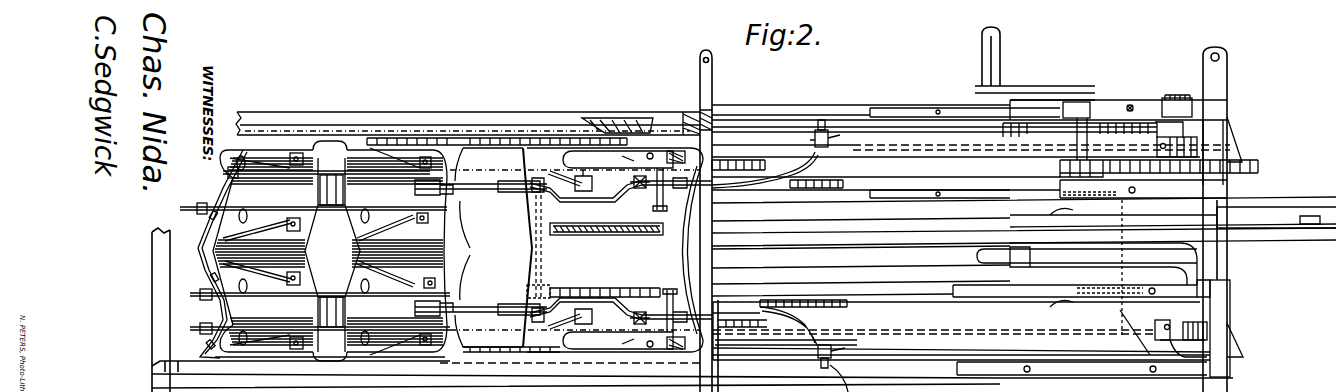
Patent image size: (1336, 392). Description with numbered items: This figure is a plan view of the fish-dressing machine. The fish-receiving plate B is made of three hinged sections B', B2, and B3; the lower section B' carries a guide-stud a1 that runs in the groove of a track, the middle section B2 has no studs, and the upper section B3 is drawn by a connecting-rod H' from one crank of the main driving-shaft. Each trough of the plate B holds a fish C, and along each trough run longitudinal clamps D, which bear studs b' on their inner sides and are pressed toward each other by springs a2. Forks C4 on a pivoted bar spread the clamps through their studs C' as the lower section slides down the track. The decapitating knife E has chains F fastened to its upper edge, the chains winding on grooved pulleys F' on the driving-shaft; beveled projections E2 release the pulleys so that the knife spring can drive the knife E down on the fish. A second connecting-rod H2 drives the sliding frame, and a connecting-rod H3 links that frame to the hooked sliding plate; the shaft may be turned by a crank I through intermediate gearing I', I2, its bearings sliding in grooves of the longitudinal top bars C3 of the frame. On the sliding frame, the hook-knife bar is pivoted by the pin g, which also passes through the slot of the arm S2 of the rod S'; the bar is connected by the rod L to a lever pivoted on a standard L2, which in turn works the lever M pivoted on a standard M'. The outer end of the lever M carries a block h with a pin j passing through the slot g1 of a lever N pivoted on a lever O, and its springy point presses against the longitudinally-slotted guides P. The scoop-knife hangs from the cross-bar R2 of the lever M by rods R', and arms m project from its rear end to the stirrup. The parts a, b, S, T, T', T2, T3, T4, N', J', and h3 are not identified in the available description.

The longitudinally-slotted guides P is at (572, 112).
The knife E is at (640, 118).
The plate for receiving the fish B is at (315, 251).
The lower section of the plate B' is at (215, 254).
The middle section of the plate B2 is at (296, 238).
The upper section of the plate B3 is at (379, 241).
The spring rod a is at (390, 285).
The guide-stud a1 is at (386, 228).
The springs a2 is at (257, 230).
The block b is at (343, 236).
The studs b' is at (299, 203).
The longitudinal clamps D is at (391, 236).
The plate S is at (570, 255).
The rod or bar S' is at (481, 199).
The arm S2 is at (481, 300).
The plate T is at (576, 250).
The hatched bar T' is at (606, 233).
The bent rod T2 is at (619, 195).
The bent rod T3 is at (619, 317).
The dashed link T4 is at (546, 262).
The bar or rod L is at (560, 168).
The standard L2 is at (555, 328).
The arm m is at (576, 249).
The lever M is at (636, 250).
The standard M' is at (630, 314).
The cross-bar R2 is at (665, 189).
The bars or rods R' is at (667, 299).
The lever N is at (733, 226).
The rod N' is at (705, 342).
The lever O is at (636, 244).
The crank I is at (969, 125).
The intermediate gearing I' is at (985, 160).
The intermediate gearing I2 is at (1258, 166).
The longitudinal top bars C3 is at (1033, 206).
The forks C4 is at (1276, 211).
The studs C' is at (1083, 327).
The fishes C is at (922, 364).
The chains F is at (956, 330).
The grooved pulleys F' is at (971, 155).
The block J' is at (886, 131).
The connecting-rod H2 is at (858, 209).
The connecting-rod H3 is at (828, 246).
The connecting-rod H' is at (861, 271).
The block h is at (961, 346).
The bent bar h3 is at (1087, 266).
The pin g is at (1041, 333).
The longitudinal slot g1 is at (1125, 196).
The stud or pin j is at (1069, 257).
The beveled projections or studs E2 is at (643, 206).